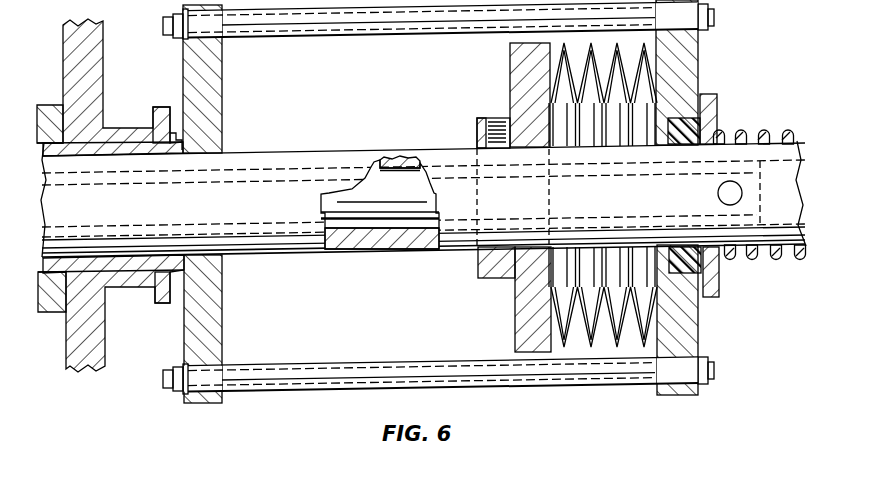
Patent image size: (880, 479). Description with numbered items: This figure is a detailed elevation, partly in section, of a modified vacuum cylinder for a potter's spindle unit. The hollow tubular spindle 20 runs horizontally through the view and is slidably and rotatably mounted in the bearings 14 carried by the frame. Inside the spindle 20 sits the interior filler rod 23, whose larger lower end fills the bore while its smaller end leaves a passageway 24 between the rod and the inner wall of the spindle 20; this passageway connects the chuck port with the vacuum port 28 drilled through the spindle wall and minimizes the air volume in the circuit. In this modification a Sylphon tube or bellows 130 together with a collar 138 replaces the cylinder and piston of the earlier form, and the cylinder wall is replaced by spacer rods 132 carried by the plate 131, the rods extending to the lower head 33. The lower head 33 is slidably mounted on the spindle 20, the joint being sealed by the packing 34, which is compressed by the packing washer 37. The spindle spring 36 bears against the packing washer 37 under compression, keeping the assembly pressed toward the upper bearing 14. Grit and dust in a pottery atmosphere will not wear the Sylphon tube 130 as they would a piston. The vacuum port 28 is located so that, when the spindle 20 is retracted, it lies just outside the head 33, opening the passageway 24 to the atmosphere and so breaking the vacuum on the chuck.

The bearing 14 is at (182, 147).
The spindle 20 is at (303, 142).
The interior filler rod 23 is at (355, 218).
The passageway 24 is at (402, 229).
The vacuum port 28 is at (718, 193).
The lower head 33 is at (698, 66).
The packing 34 is at (700, 272).
The spindle spring 36 is at (764, 128).
The packing washer 37 is at (718, 118).
The Sylphon tube 130 is at (557, 69).
The plate 131 is at (222, 84).
The spacer rod 132 is at (326, 36).
The collar 138 is at (523, 288).